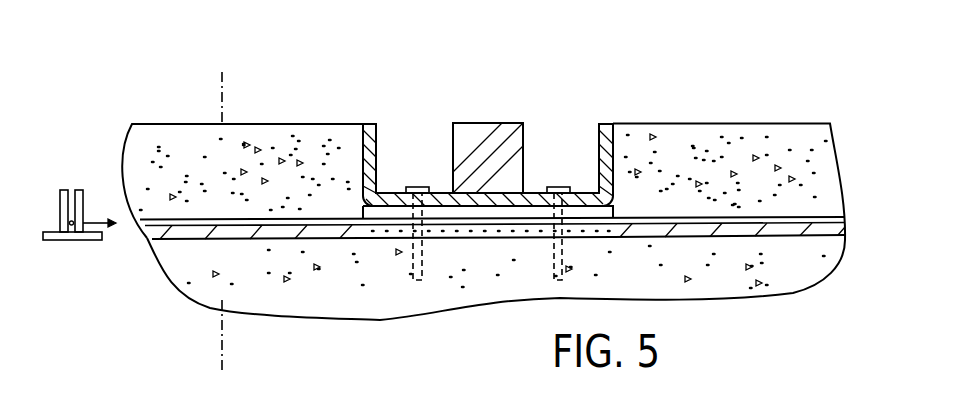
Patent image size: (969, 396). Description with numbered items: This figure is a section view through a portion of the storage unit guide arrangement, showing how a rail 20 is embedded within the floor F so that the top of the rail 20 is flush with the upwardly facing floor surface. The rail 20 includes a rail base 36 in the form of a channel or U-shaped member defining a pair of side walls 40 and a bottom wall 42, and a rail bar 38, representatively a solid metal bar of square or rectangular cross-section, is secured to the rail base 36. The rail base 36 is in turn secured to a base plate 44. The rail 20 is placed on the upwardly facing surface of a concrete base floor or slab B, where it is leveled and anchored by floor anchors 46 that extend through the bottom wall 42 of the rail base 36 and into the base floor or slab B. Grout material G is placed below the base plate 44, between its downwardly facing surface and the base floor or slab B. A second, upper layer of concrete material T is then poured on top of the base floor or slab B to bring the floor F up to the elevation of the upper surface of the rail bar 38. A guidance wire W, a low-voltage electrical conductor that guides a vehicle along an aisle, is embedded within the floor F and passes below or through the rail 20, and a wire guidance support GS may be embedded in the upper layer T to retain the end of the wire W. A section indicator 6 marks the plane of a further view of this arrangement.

The rail 20 is at (488, 80).
The rail base 36 is at (370, 118).
The rail bar 38 is at (488, 122).
The side walls 40 is at (373, 157).
The bottom wall 42 is at (532, 190).
The base plate 44 is at (455, 213).
The floor anchors 46 is at (410, 265).
The section line 6 is at (266, 373).
The wire guidance support GS is at (68, 175).
The floor F is at (736, 120).
The upper layer of concrete material T is at (823, 140).
The guidance wire W is at (823, 222).
The grout material G is at (503, 235).
The base floor or slab B is at (783, 271).